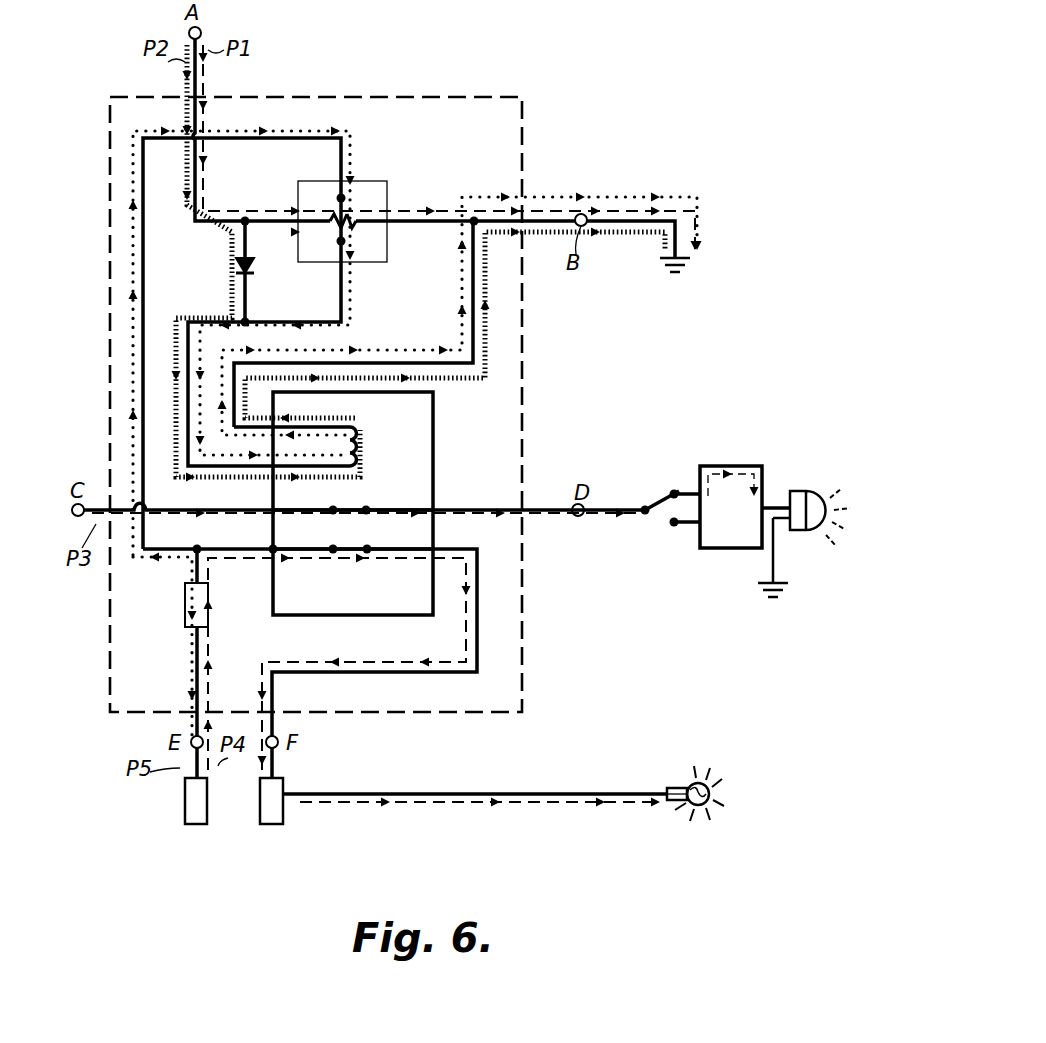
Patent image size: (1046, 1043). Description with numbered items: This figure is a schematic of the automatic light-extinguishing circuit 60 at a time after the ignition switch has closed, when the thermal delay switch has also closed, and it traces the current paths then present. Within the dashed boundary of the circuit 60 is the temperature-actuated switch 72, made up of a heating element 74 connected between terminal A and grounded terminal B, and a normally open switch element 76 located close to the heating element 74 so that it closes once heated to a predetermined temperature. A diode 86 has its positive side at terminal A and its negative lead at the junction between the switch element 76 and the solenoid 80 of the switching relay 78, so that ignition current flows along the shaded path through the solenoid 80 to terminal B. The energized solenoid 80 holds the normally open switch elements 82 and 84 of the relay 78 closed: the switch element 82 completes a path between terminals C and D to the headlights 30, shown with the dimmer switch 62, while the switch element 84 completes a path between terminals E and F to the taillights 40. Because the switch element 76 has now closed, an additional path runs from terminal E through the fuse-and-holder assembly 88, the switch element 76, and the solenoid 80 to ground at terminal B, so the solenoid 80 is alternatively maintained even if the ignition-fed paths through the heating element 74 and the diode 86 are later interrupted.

The headlights 30 is at (804, 491).
The taillights 40 is at (703, 807).
The automatic light-extinguishing circuit 60 is at (522, 370).
The dimmer switch 62 is at (660, 500).
The temperature-actuated switch 72 is at (366, 181).
The heating element 74 is at (352, 226).
The switch element 76 is at (345, 198).
The switching relay 78 is at (433, 462).
The solenoid 80 is at (360, 447).
The switch element 82 is at (348, 510).
The switch element 84 is at (340, 552).
The diode 86 is at (254, 273).
The fuse-and-holder assembly 88 is at (185, 612).